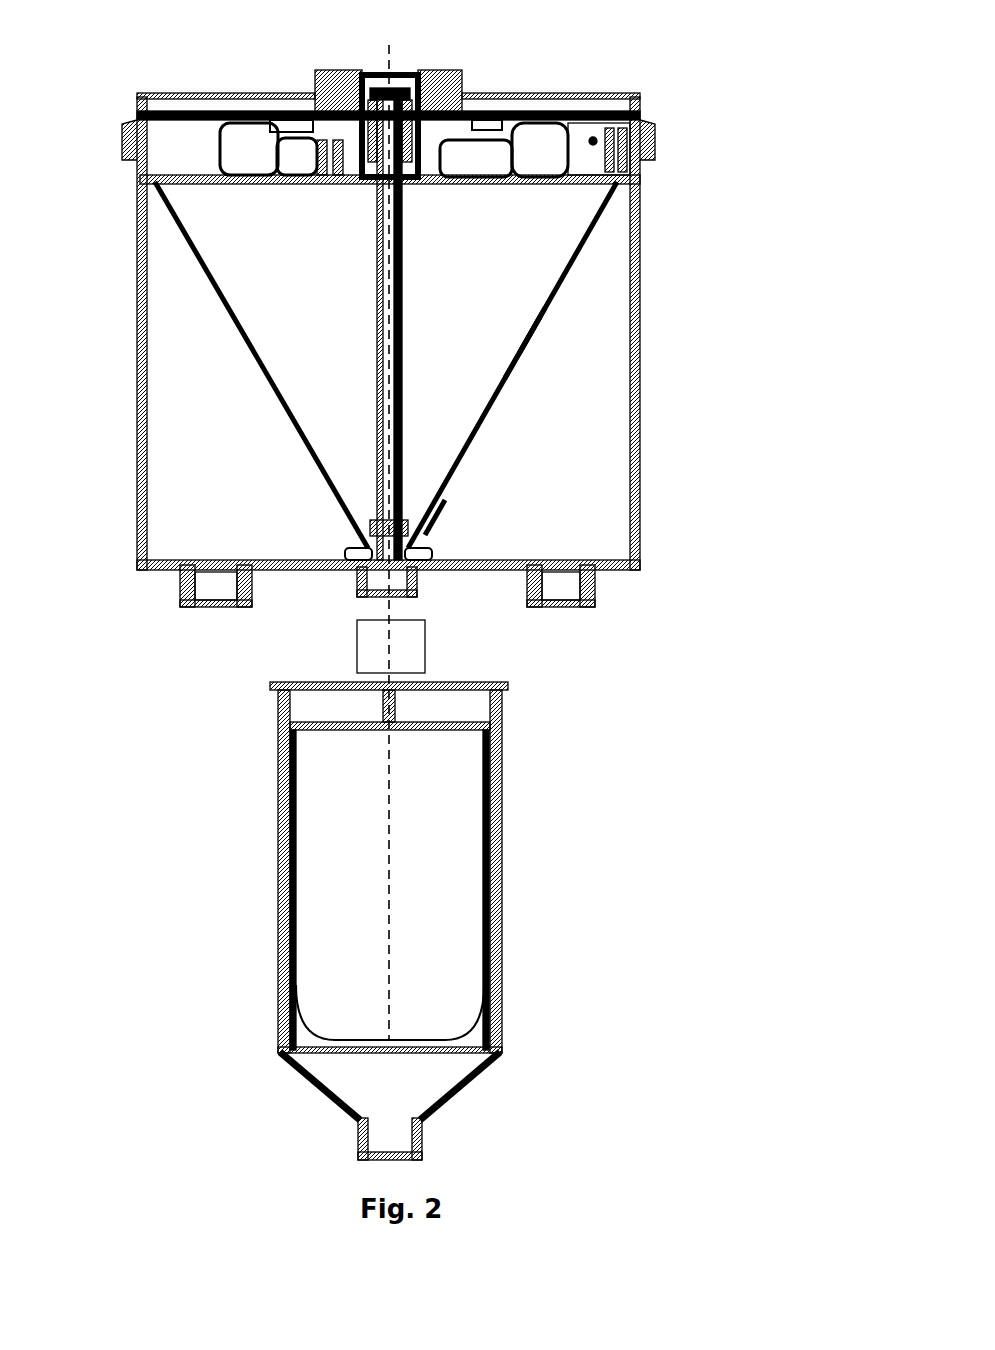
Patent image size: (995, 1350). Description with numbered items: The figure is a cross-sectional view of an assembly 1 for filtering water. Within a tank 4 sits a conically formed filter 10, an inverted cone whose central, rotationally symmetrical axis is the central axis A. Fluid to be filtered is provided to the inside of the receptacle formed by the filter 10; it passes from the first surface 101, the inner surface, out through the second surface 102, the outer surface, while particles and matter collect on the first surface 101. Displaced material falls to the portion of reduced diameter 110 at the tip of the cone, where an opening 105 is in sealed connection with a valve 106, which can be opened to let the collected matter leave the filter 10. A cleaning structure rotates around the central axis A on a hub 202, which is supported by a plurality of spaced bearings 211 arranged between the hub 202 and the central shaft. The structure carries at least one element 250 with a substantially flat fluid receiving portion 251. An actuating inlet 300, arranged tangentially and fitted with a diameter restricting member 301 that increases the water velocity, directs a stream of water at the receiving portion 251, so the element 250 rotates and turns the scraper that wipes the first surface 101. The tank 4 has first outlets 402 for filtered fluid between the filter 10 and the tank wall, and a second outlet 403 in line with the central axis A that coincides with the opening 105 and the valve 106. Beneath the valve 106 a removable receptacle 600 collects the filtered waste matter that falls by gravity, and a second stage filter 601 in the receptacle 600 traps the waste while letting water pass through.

The central axis A is at (389, 60).
The assembly 1 is at (100, 150).
The tank 4 is at (655, 237).
The filter 10 is at (386, 328).
The first surface 101 is at (495, 382).
The second surface 102 is at (532, 366).
The opening 105 is at (377, 578).
The valve 106 is at (425, 634).
The portion of reduced diameter 110 is at (437, 516).
The hub 202 is at (353, 163).
The bearings 211 is at (366, 156).
The element 250 is at (517, 133).
The fluid receiving portion 251 is at (255, 145).
The actuating inlet 300 is at (597, 124).
The diameter restricting member 301 is at (598, 141).
The first outlet 402 is at (217, 598).
The second outlet 403 is at (458, 632).
The receptacle 600 is at (391, 921).
The filter 601 is at (292, 830).